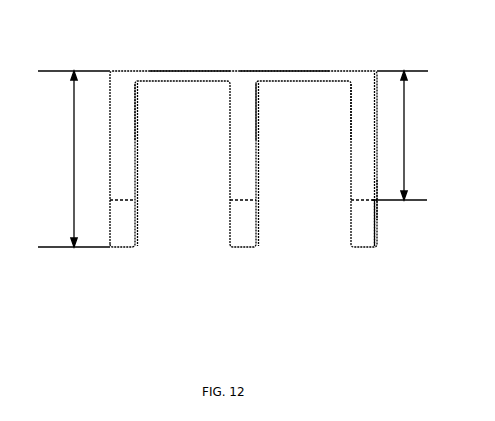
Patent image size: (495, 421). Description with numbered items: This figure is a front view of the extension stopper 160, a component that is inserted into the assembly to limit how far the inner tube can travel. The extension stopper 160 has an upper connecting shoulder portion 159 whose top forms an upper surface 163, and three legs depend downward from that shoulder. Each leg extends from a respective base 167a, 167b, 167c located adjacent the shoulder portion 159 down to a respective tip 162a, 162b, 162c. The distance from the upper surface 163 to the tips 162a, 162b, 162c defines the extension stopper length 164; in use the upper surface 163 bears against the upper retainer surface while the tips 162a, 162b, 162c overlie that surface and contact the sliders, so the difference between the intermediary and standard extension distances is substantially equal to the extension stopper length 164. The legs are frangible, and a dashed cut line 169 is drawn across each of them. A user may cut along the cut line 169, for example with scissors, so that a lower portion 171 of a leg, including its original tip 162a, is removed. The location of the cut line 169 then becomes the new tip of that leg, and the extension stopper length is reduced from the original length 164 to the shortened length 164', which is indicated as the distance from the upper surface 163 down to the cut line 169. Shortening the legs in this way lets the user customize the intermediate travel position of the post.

The extension stopper 160 is at (137, 53).
The upper surface 163 is at (182, 70).
The shoulder portion 159 is at (268, 70).
The extension stopper length 164 is at (51, 159).
The shortened length 164' is at (432, 135).
The base 167a is at (337, 88).
The base 167b is at (263, 88).
The base 167c is at (138, 87).
The tip 162a is at (363, 248).
The tip 162b is at (242, 248).
The tip 162c is at (123, 248).
The cut line 169 is at (368, 201).
The lower portion 171 is at (368, 226).